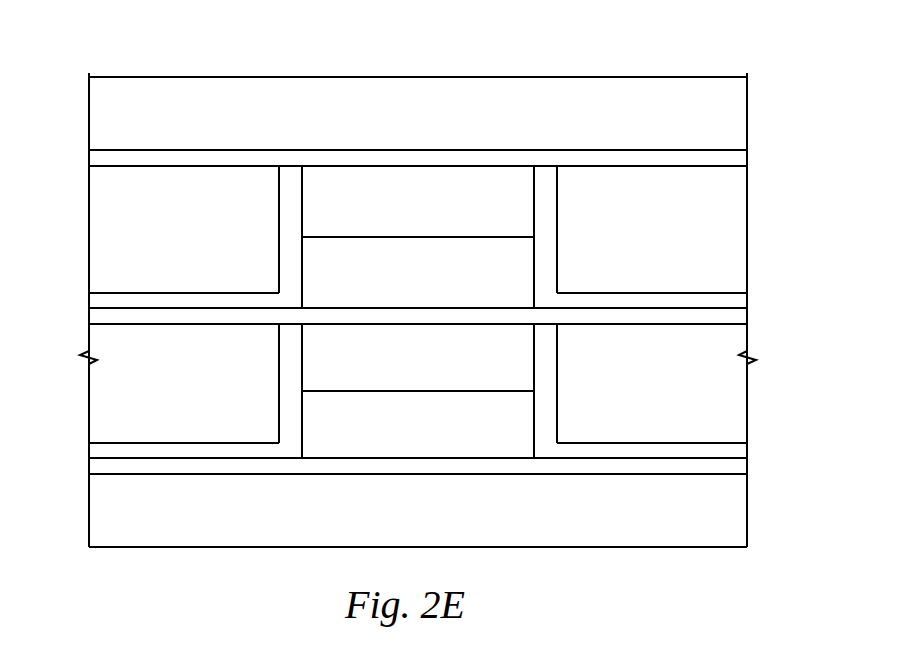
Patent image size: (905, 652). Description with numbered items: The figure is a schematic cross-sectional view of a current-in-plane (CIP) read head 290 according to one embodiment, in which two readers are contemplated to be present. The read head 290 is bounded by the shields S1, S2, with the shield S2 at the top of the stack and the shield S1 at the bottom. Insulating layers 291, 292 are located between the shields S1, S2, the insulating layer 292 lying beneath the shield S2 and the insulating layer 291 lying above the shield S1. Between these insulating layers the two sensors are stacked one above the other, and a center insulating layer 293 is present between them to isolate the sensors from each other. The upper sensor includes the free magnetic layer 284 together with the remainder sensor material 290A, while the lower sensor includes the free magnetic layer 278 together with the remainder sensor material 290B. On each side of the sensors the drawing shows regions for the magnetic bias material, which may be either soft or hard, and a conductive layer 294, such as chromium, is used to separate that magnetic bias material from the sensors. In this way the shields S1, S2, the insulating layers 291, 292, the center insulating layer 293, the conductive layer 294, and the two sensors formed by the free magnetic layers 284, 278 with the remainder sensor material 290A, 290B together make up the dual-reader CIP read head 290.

The current-in-plane (CIP) read head 290 is at (120, 45).
The insulating layer 292 is at (737, 158).
The conductive layer 294 is at (737, 300).
The center insulating layer 293 is at (737, 319).
The insulating layer 291 is at (737, 468).
The free magnetic layer 284 is at (438, 214).
The remainder sensor material 290A is at (453, 286).
The remainder sensor material 290B is at (453, 369).
The free magnetic layer 278 is at (438, 434).
The shield S1 is at (430, 517).
The shield S2 is at (429, 122).